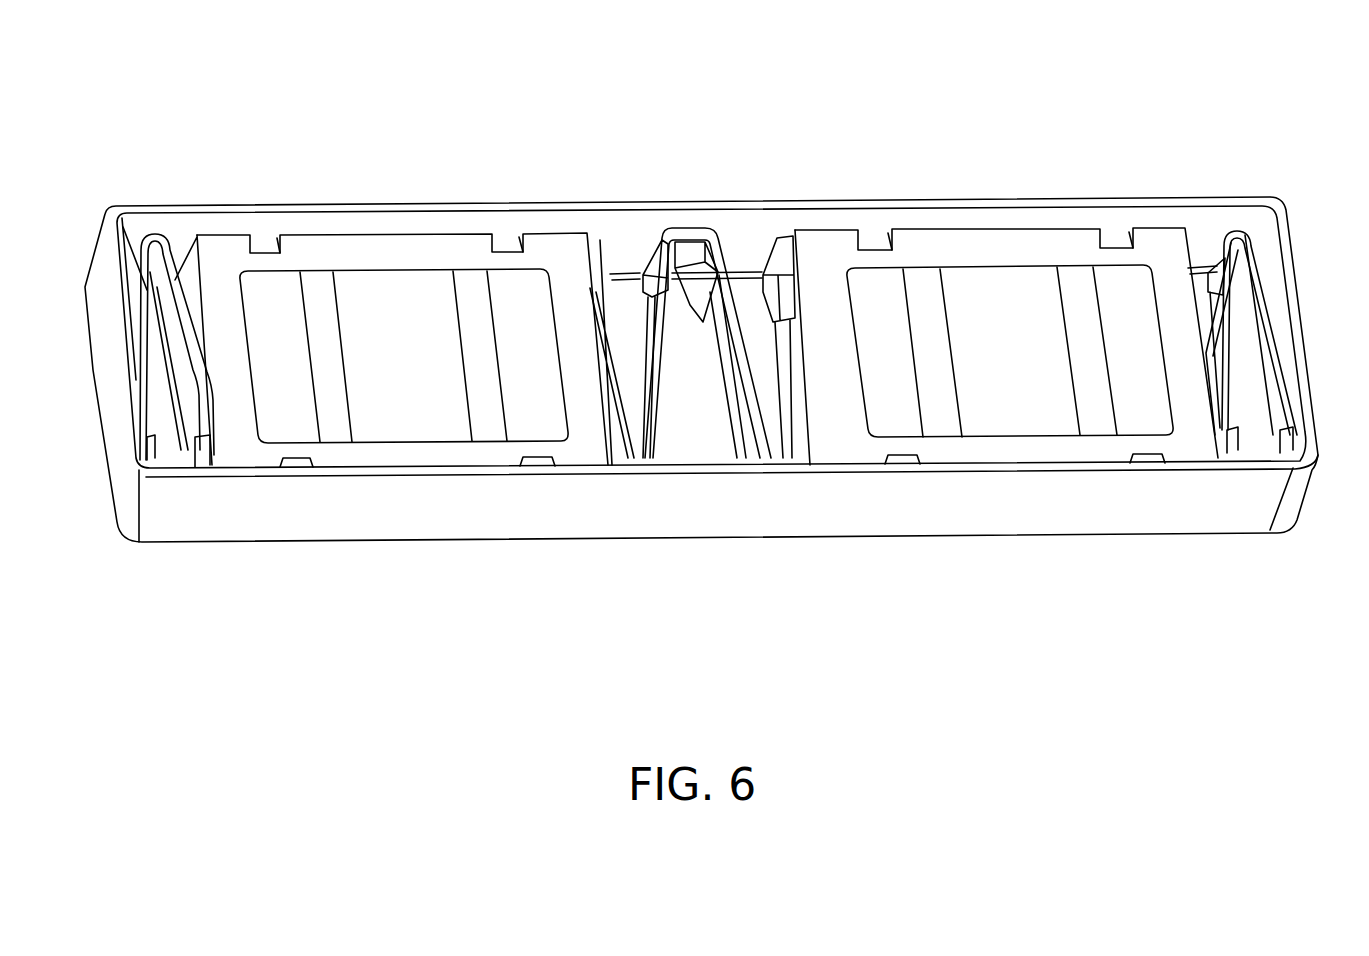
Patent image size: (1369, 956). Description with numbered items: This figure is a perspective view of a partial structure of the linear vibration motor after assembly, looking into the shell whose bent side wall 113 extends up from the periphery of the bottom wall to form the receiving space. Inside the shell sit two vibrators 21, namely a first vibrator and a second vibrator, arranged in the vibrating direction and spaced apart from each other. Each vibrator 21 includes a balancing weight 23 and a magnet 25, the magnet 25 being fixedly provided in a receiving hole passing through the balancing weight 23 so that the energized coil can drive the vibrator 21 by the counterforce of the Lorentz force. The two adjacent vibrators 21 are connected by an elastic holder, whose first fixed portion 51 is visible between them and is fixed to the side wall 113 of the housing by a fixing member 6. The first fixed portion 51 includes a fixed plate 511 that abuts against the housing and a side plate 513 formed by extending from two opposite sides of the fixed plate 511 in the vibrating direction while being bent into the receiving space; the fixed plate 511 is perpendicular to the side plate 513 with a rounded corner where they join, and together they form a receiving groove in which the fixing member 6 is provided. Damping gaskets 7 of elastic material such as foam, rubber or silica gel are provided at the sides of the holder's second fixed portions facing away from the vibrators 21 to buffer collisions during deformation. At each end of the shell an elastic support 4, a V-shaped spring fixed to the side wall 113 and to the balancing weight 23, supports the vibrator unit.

The side wall 113 is at (360, 515).
The vibrator 21 is at (361, 312).
The balancing weight 23 is at (458, 250).
The magnet 25 is at (432, 415).
The first fixed portion 51 is at (737, 339).
The fixed plate 511 is at (790, 362).
The side plate 513 is at (660, 243).
The fixing member 6 is at (690, 320).
The damping gasket 7 is at (587, 237).
The elastic support 4 is at (150, 236).